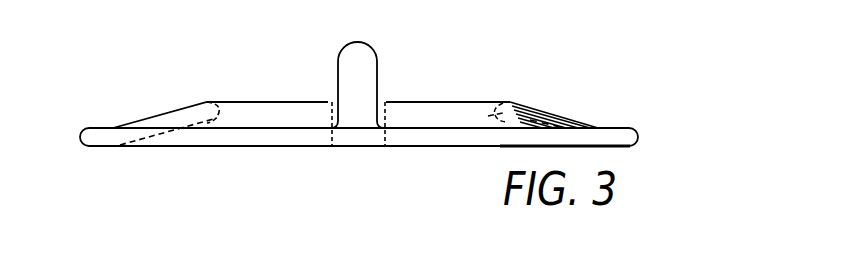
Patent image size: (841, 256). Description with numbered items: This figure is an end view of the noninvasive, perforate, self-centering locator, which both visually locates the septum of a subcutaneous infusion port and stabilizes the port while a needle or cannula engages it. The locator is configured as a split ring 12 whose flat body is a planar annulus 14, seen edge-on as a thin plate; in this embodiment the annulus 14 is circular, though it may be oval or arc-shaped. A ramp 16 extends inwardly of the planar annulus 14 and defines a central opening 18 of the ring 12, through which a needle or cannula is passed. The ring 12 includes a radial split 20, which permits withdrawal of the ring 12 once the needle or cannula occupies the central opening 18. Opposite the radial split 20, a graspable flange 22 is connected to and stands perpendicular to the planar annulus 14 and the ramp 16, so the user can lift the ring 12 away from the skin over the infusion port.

The split ring 12 is at (640, 133).
The planar annulus 14 is at (623, 127).
The ramp 16 is at (543, 112).
The central opening 18 is at (235, 118).
The radial split 20 is at (388, 118).
The graspable flange 22 is at (377, 53).